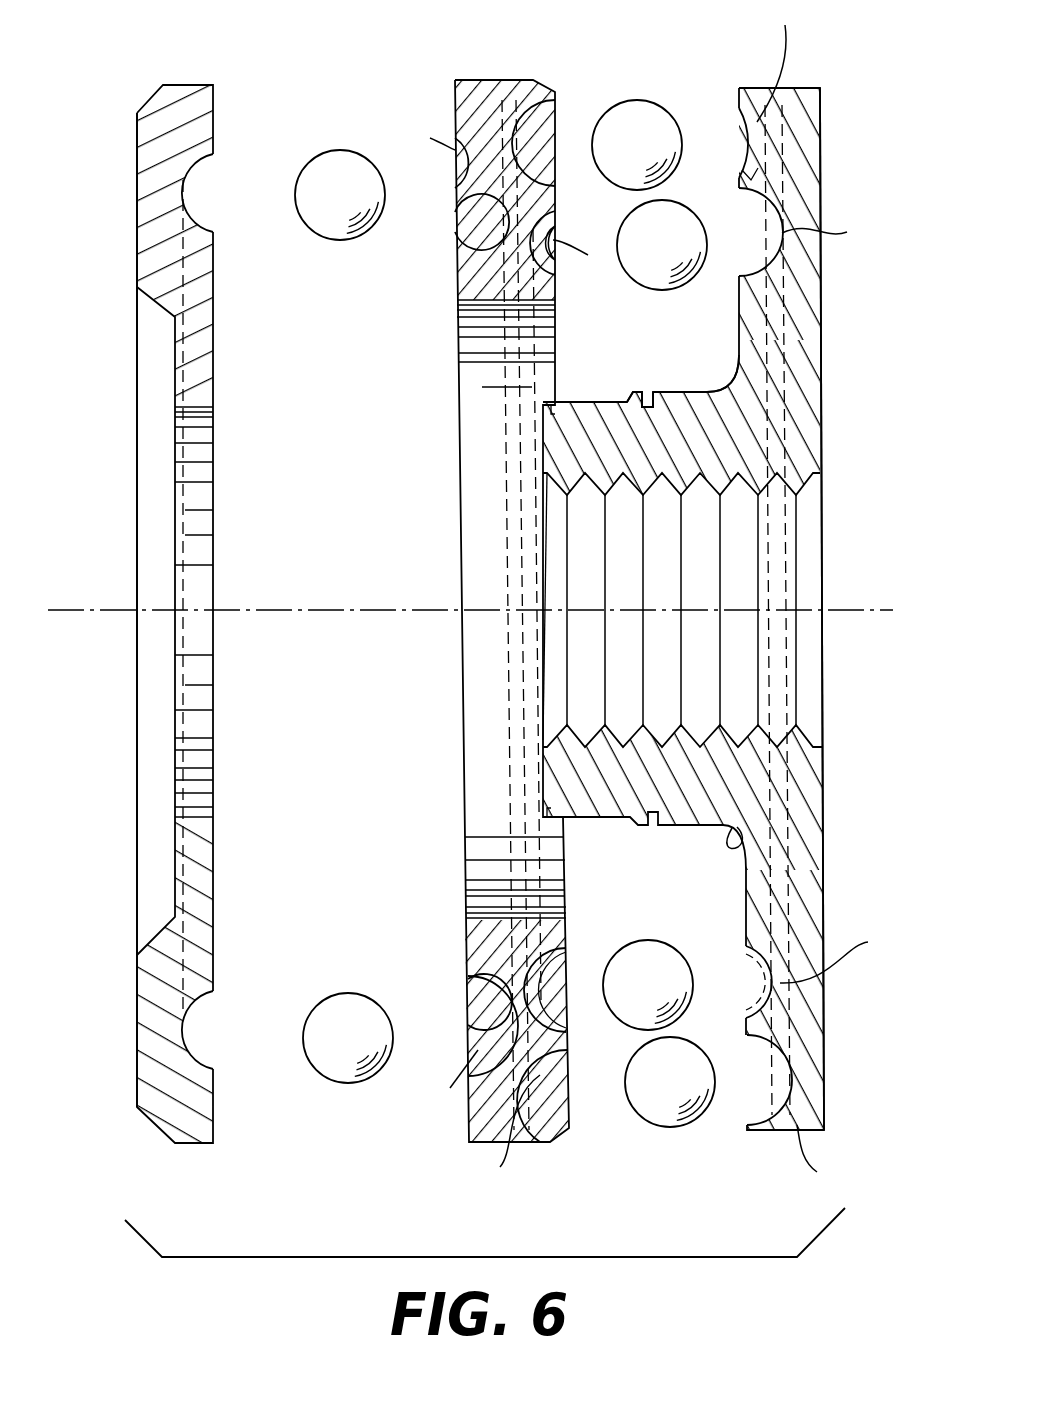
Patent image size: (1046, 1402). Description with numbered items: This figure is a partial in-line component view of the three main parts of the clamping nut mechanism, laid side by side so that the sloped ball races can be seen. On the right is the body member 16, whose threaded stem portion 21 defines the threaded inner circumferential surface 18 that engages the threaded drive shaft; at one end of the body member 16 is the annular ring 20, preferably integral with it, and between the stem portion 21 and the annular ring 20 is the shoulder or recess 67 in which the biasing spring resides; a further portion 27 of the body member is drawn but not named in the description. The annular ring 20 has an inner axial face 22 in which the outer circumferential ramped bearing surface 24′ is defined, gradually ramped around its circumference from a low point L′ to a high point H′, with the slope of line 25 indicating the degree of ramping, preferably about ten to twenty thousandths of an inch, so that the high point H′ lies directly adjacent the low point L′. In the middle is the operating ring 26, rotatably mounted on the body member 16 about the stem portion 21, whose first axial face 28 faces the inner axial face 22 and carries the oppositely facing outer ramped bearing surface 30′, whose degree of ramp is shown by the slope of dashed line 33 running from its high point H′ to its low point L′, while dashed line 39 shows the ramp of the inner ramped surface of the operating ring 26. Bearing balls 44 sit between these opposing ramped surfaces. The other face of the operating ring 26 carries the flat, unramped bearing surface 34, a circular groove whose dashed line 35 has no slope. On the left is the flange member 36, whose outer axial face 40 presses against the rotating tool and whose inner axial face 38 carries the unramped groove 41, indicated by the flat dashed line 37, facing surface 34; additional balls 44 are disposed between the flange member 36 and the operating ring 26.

The body member 16 is at (822, 345).
The threaded inner circumferential surface 18 is at (720, 660).
The annular ring 20 is at (785, 183).
The threaded stem portion 21 is at (630, 437).
The inner axial face 22 is at (735, 318).
The outer circumferential ramped bearing surface 24′ is at (737, 140).
The line 25 is at (795, 872).
The operating ring 26 is at (510, 105).
The outer cylindrical surface of nut 27 is at (782, 380).
The first axial face 28 is at (553, 193).
The outer ramped bearing surface 30′ is at (550, 105).
The dashed line 33 is at (540, 966).
The unramped bearing surface 34 is at (465, 200).
The dashed line 35 is at (497, 475).
The flange member 36 is at (178, 100).
The dashed line 37 is at (213, 568).
The inner axial face 38 is at (212, 310).
The dashed line 39 is at (515, 880).
The outer axial face 40 is at (137, 240).
The unramped bearing surface 41 is at (184, 192).
The bearing balls 44 is at (640, 115).
The shoulder 67 is at (738, 846).
The low point L′ is at (634, 651).
The high point H′ is at (625, 598).